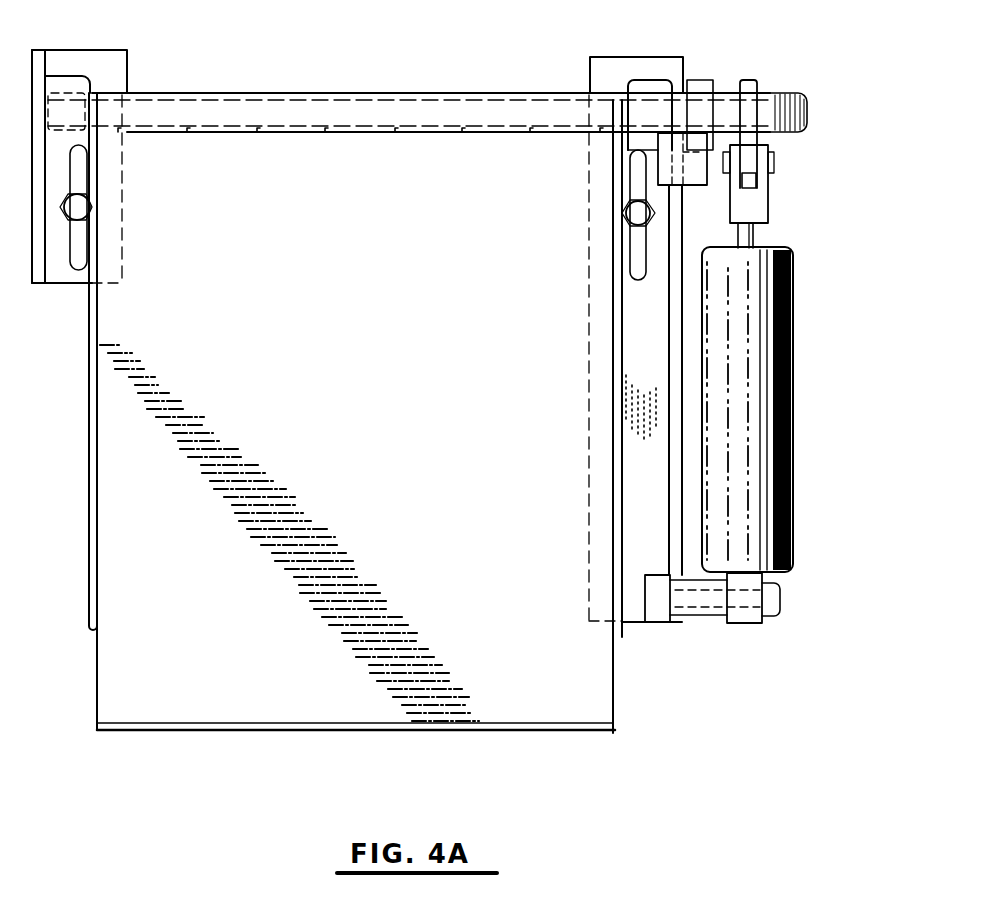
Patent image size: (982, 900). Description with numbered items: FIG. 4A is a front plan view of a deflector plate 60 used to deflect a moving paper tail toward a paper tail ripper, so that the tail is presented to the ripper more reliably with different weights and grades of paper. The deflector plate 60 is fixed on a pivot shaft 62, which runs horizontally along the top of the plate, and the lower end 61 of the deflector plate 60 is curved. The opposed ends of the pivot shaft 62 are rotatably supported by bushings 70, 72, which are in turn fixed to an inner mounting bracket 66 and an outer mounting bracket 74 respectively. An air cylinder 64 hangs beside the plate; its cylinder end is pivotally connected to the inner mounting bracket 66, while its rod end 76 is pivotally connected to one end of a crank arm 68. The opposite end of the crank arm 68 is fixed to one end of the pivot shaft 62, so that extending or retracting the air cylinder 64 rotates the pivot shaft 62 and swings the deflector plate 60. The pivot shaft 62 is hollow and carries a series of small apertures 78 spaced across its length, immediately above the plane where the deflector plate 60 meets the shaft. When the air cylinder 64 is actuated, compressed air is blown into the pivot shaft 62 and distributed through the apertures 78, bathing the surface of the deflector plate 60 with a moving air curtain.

The deflector plate 60 is at (438, 392).
The lower end 61 is at (308, 724).
The pivot shaft 62 is at (300, 92).
The air cylinder 64 is at (795, 349).
The inner mounting bracket 66 is at (633, 616).
The crank arm 68 is at (753, 81).
The bushing 70 is at (646, 79).
The bushing 72 is at (70, 75).
The outer mounting bracket 74 is at (61, 277).
The rod end 76 is at (756, 238).
The apertures 78 is at (325, 134).